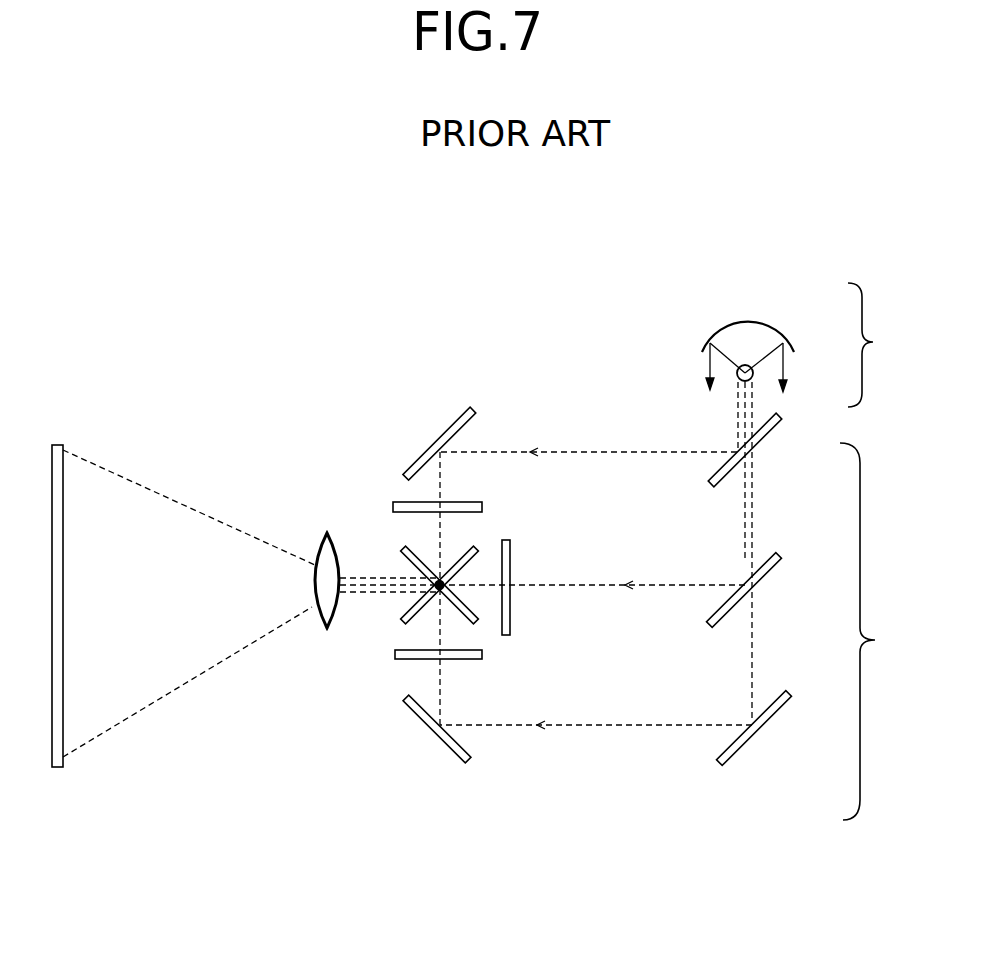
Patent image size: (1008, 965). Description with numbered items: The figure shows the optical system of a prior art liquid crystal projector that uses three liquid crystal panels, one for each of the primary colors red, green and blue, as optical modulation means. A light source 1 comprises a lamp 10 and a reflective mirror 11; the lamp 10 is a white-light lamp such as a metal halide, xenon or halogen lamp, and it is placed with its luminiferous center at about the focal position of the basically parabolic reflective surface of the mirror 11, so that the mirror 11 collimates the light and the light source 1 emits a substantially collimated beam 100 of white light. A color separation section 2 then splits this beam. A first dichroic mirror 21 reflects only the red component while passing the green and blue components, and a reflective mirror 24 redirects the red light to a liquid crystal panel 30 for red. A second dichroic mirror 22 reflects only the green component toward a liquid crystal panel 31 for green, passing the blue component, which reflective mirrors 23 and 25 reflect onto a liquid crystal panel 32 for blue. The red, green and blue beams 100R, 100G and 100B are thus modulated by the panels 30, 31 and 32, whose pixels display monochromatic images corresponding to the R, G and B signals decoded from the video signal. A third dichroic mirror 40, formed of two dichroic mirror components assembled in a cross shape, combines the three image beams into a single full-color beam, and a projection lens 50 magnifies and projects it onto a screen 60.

The light source 1 is at (868, 345).
The color separation optical system 2 is at (905, 661).
The lamp 10 is at (753, 373).
The reflective mirror 11 is at (767, 338).
The beam of white light 100 is at (736, 415).
The red beam 100R is at (655, 452).
The green beam 100G is at (683, 585).
The blue beam 100B is at (622, 728).
The first dichroic mirror 21 is at (770, 435).
The second dichroic mirror 22 is at (763, 578).
The reflective mirror 23 is at (767, 727).
The reflective mirror 24 is at (452, 420).
The reflective mirror 25 is at (448, 752).
The liquid crystal panel for red 30 is at (455, 502).
The liquid crystal panel for green 31 is at (512, 563).
The liquid crystal panel for blue 32 is at (482, 655).
The third dichroic mirror 40 is at (405, 612).
The projection lens 50 is at (323, 556).
The screen 60 is at (58, 443).